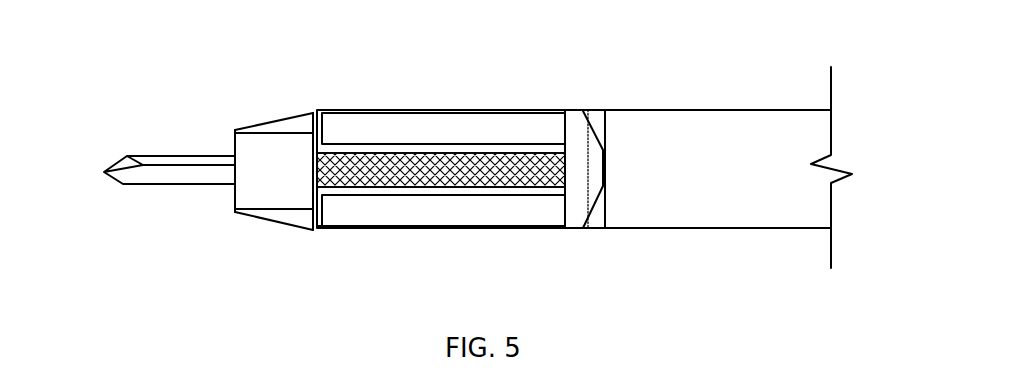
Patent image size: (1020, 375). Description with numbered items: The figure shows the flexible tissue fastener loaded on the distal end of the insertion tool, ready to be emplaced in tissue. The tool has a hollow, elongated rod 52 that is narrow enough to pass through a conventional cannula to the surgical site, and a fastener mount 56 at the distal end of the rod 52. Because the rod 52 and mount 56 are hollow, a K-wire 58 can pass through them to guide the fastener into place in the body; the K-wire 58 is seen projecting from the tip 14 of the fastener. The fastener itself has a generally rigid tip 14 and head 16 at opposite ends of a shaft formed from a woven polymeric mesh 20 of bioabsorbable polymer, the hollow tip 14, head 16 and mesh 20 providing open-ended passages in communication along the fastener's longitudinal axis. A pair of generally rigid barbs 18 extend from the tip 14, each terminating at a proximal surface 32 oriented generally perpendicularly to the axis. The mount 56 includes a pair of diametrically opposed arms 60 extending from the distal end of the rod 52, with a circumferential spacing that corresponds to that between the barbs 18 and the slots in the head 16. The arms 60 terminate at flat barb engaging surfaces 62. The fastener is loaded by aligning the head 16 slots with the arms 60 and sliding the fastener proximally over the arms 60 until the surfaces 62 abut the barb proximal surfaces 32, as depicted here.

The tip 14 is at (248, 147).
The head 16 is at (572, 135).
The barbs 18 is at (290, 123).
The woven polymeric mesh 20 is at (405, 188).
The proximal surface 32 is at (317, 227).
The rod 52 is at (710, 108).
The fastener mount 56 is at (520, 48).
The K-wire 58 is at (168, 153).
The arms 60 is at (481, 127).
The barb engaging surfaces 62 is at (325, 115).